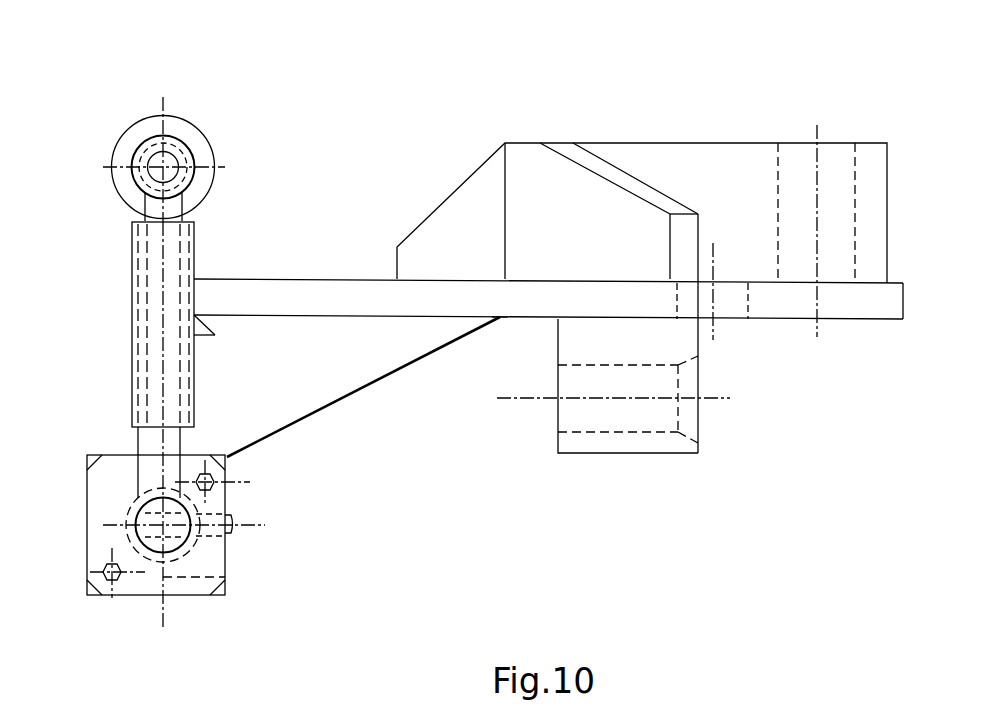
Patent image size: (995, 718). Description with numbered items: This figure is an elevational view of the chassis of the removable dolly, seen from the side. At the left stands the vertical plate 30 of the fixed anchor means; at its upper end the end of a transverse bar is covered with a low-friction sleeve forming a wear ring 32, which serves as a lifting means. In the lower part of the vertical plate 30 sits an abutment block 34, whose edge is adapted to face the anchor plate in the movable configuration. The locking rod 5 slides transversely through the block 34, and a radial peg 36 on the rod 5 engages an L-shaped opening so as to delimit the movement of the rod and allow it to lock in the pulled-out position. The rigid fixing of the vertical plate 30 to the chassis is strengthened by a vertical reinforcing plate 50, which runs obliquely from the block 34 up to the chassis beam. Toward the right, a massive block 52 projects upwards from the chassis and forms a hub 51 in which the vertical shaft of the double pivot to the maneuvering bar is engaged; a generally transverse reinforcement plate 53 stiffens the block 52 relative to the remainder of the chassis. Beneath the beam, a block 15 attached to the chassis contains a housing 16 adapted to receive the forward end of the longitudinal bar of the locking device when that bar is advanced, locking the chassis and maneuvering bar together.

The rod 5 is at (132, 262).
The block 15 is at (653, 453).
The housing 16 is at (643, 365).
The vertical plate 30 is at (183, 360).
The wear ring 32 is at (186, 130).
The block 34 is at (225, 570).
The radial peg 36 is at (233, 530).
The vertical reinforcing plate 50 is at (405, 367).
The hub 51 is at (780, 170).
The massive block 52 is at (618, 143).
The transverse reinforcement plate 53 is at (572, 188).